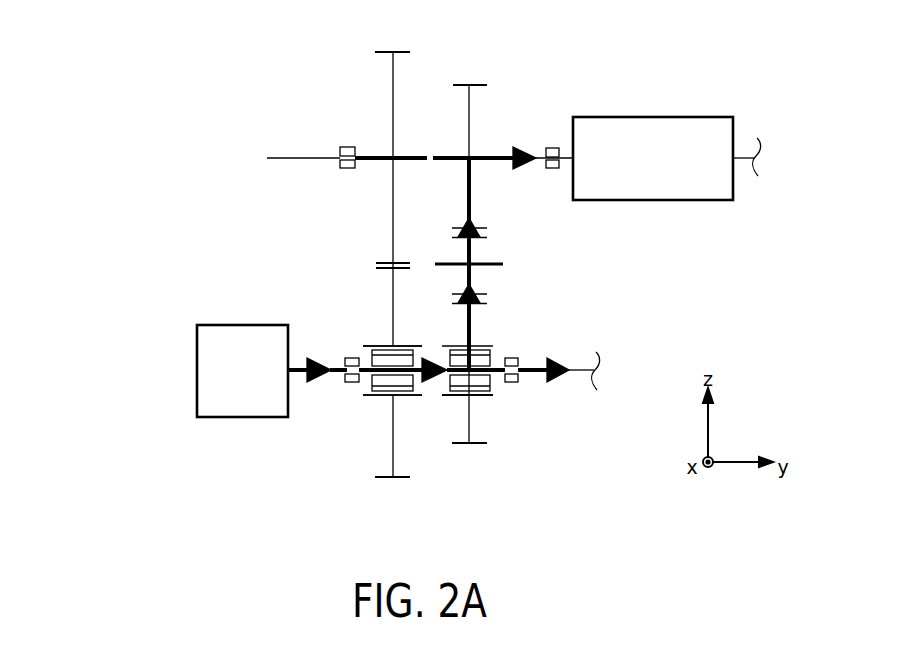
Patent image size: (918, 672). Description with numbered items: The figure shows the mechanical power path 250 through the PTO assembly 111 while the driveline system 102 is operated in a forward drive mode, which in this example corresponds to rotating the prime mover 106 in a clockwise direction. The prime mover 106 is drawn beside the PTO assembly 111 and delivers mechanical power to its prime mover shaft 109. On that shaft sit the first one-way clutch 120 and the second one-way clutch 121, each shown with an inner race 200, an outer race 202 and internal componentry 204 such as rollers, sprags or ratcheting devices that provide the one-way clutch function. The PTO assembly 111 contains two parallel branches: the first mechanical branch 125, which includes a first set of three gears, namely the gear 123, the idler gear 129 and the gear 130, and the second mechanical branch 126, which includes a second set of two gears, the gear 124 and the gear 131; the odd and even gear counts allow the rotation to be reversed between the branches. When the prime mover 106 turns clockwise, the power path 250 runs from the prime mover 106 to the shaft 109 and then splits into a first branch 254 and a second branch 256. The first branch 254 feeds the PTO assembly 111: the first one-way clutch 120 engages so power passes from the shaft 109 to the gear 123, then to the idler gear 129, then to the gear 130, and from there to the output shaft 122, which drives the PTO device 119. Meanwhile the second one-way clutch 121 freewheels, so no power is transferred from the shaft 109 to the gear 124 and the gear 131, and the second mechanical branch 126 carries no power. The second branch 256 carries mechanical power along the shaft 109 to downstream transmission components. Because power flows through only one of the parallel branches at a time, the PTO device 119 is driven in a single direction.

The driveline system 102 is at (128, 352).
The prime mover 106 is at (210, 324).
The prime mover shaft 109 is at (303, 350).
The PTO assembly 111 is at (779, 79).
The PTO device 119 is at (590, 116).
The first one-way clutch 120 is at (512, 343).
The second one-way clutch 121 is at (351, 348).
The output shaft 122 is at (280, 160).
The gear 123 is at (478, 445).
The gear 124 is at (400, 478).
The first mechanical branch 125 is at (470, 67).
The second mechanical branch 126 is at (394, 36).
The idler gear 129 is at (499, 247).
The gear 130 is at (469, 100).
The gear 131 is at (393, 80).
The inner race 200 is at (367, 378).
The outer race 202 is at (415, 393).
The internal componentry 204 is at (428, 346).
The mechanical power path 250 is at (297, 375).
The first branch 254 is at (493, 287).
The second branch 256 is at (582, 350).